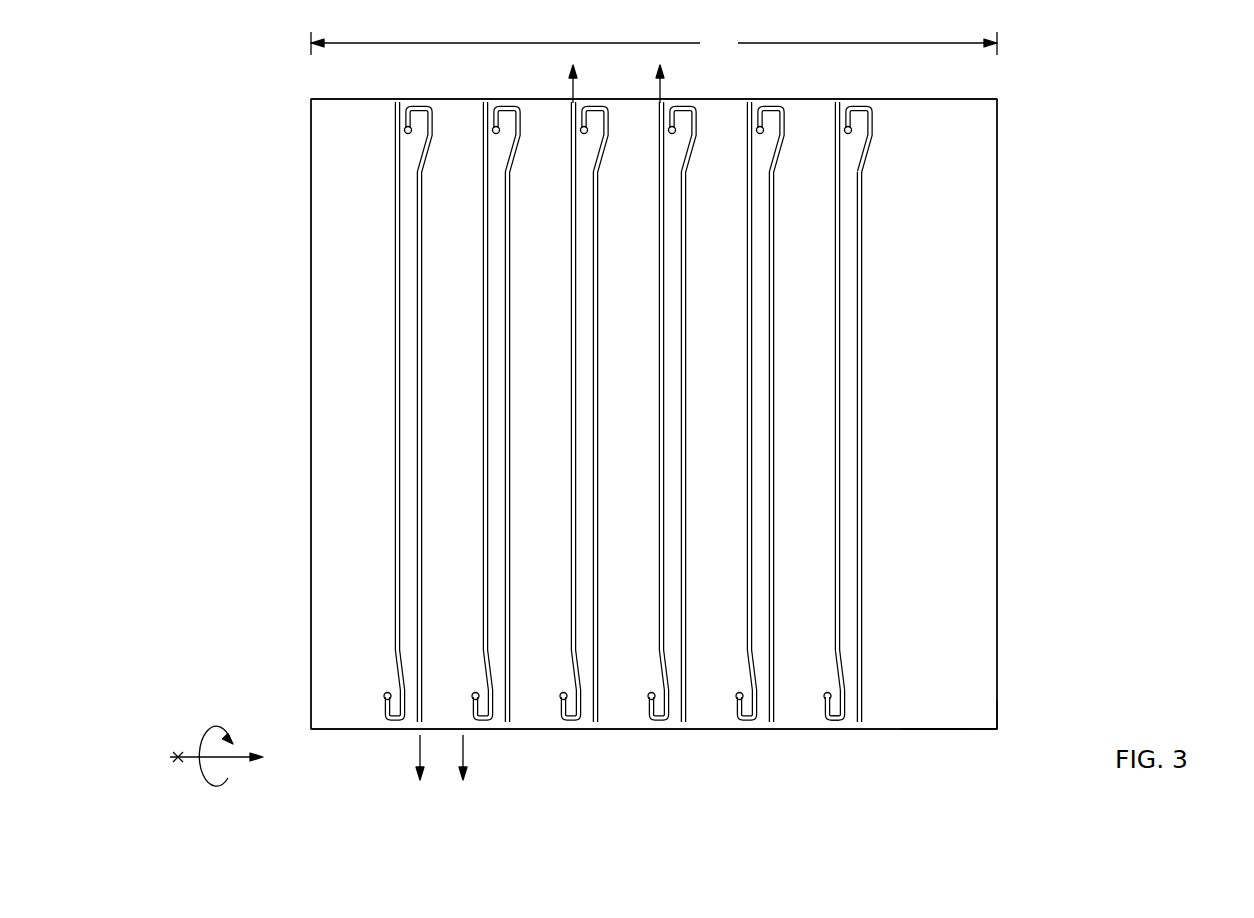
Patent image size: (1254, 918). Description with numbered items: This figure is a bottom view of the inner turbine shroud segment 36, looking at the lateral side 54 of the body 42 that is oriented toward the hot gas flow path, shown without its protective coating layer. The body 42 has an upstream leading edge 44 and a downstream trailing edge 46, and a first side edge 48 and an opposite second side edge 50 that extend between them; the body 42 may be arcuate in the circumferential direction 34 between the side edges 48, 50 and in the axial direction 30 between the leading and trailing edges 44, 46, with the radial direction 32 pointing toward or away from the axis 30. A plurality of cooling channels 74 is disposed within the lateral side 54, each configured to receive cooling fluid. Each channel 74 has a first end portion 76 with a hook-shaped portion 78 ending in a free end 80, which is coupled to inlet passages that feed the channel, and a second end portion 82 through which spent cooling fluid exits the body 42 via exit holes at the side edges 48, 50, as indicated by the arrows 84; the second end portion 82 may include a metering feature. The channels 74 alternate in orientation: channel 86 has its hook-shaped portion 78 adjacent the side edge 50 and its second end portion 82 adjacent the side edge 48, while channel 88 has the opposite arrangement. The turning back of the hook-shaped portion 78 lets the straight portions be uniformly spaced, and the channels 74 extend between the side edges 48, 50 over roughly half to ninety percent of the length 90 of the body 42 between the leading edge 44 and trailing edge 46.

The axial axis 30 is at (237, 760).
The radial direction 32 is at (178, 755).
The circumferential direction 34 is at (205, 735).
The inner turbine shroud segment 36 is at (963, 730).
The body 42 is at (988, 732).
The leading edge 44 is at (311, 592).
The trailing edge 46 is at (998, 508).
The first side edge 48 is at (620, 730).
The second side edge 50 is at (550, 98).
The lateral side 54 is at (905, 130).
The channels 74 is at (840, 426).
The first end portion 76 is at (820, 708).
The hook-shaped portion 78 is at (830, 722).
The free end 80 is at (835, 672).
The second end portion 82 is at (836, 100).
The arrows 84 is at (578, 95).
The channel 86 is at (418, 105).
The channel 88 is at (397, 100).
The length 90 is at (654, 43).